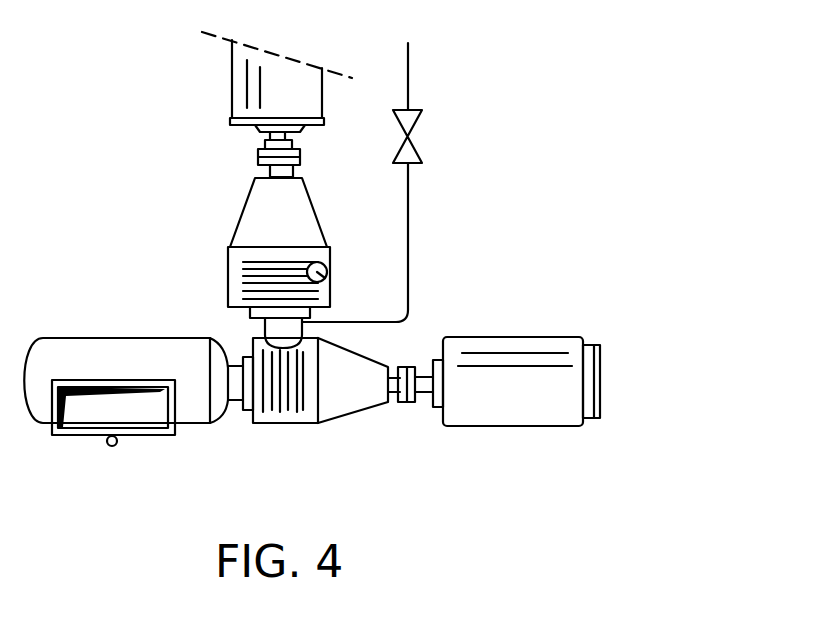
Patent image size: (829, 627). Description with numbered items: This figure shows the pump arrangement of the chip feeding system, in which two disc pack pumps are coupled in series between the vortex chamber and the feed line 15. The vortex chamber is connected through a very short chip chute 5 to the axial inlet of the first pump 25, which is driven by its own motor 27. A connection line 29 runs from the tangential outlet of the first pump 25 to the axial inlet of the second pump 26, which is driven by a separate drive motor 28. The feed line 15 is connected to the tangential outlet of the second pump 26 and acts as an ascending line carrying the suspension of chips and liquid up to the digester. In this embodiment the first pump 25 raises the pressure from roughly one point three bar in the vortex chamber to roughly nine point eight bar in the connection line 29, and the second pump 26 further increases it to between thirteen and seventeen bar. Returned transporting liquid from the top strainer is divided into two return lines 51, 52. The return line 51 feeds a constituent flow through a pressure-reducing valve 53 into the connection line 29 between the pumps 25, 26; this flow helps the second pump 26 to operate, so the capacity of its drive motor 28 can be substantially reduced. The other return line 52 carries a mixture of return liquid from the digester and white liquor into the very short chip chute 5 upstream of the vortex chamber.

The chip chute 5 is at (77, 407).
The feed line 15 is at (327, 266).
The first pump 25 is at (355, 403).
The second pump 26 is at (228, 270).
The motor 27 is at (552, 337).
The drive motor 28 is at (232, 85).
The connection line 29 is at (262, 334).
The return line 51 is at (408, 63).
The return line 52 is at (113, 447).
The pressure-reducing valve 53 is at (420, 118).